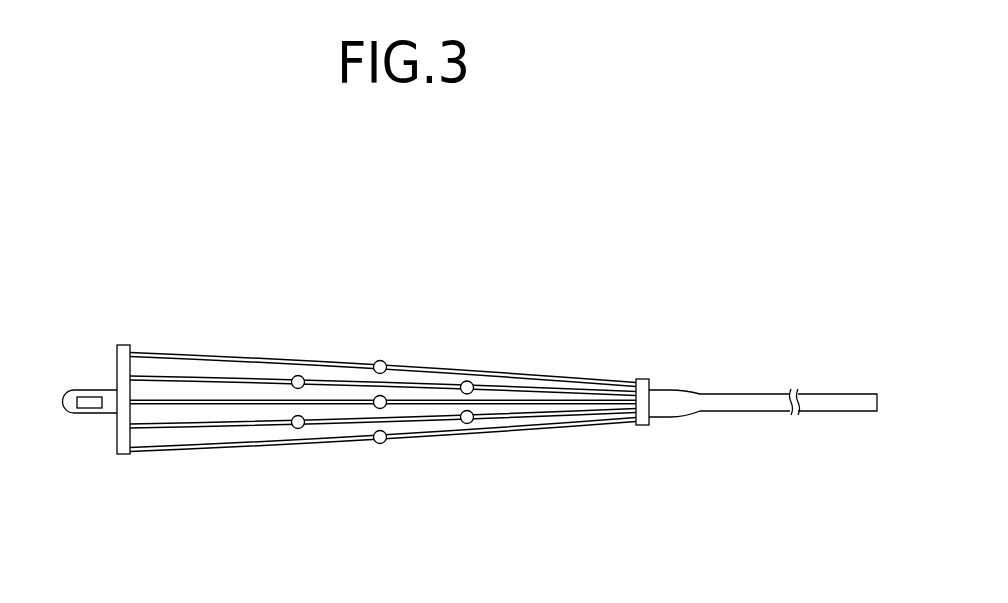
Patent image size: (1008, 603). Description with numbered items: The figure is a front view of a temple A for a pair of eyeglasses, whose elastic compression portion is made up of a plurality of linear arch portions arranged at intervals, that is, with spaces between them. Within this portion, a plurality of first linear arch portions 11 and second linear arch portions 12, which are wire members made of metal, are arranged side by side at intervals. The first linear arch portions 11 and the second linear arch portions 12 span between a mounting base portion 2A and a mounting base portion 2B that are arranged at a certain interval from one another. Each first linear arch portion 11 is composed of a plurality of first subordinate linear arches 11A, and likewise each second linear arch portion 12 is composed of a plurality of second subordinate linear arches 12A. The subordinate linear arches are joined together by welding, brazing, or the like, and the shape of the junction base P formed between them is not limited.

The mounting base portion 2A is at (125, 347).
The mounting base portion 2B is at (645, 380).
The first linear arch portion 11 is at (477, 293).
The first subordinate linear arch 11A is at (318, 362).
The second linear arch portion 12 is at (533, 518).
The second subordinate linear arch 12A is at (258, 383).
The junction base P is at (472, 384).
The temple A is at (749, 325).